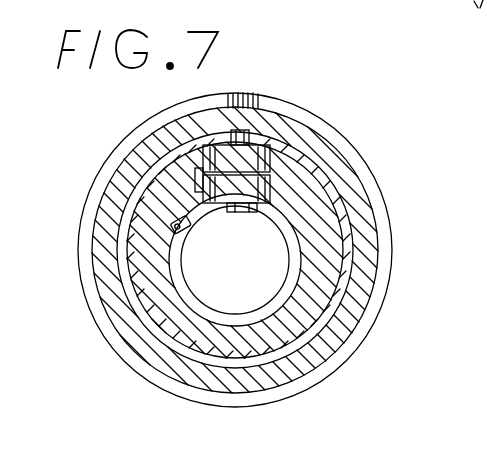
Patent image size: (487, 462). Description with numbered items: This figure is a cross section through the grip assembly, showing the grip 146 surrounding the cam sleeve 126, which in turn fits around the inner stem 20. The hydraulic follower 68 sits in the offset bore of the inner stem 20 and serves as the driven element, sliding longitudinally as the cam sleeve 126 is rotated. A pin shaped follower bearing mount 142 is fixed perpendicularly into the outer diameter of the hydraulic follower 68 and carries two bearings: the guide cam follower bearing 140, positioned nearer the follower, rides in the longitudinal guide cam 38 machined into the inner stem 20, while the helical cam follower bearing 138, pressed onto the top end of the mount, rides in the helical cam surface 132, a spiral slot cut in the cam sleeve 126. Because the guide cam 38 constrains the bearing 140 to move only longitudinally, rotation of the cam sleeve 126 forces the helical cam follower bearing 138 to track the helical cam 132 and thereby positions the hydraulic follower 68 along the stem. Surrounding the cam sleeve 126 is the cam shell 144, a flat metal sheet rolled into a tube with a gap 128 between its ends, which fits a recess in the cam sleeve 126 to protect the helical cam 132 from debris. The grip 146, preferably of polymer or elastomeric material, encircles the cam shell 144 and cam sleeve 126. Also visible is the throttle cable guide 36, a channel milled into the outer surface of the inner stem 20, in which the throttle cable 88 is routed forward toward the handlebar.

The inner stem 20 is at (268, 190).
The throttle cable guide 36 is at (182, 272).
The longitudinal guide cam 38 is at (260, 212).
The hydraulic follower 68 is at (278, 239).
The throttle cable 88 is at (184, 221).
The cam sleeve 126 is at (318, 312).
The gap 128 is at (223, 137).
The helical cam surface 132 is at (150, 150).
The helical cam follower bearing 138 is at (241, 153).
The guide cam follower bearing 140 is at (293, 207).
The follower bearing mount 142 is at (196, 171).
The cam shell 144 is at (348, 251).
The grip 146 is at (293, 368).